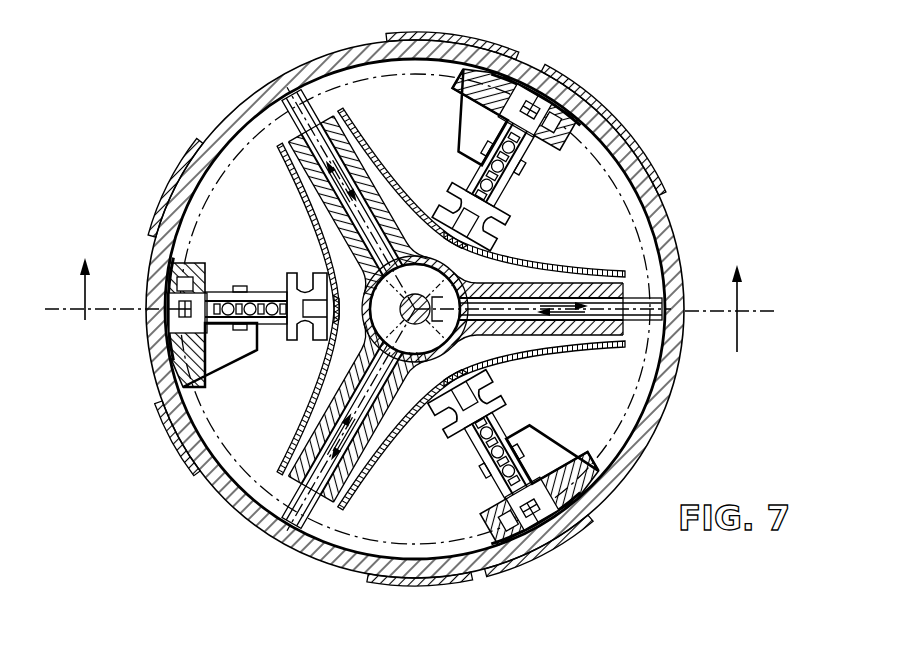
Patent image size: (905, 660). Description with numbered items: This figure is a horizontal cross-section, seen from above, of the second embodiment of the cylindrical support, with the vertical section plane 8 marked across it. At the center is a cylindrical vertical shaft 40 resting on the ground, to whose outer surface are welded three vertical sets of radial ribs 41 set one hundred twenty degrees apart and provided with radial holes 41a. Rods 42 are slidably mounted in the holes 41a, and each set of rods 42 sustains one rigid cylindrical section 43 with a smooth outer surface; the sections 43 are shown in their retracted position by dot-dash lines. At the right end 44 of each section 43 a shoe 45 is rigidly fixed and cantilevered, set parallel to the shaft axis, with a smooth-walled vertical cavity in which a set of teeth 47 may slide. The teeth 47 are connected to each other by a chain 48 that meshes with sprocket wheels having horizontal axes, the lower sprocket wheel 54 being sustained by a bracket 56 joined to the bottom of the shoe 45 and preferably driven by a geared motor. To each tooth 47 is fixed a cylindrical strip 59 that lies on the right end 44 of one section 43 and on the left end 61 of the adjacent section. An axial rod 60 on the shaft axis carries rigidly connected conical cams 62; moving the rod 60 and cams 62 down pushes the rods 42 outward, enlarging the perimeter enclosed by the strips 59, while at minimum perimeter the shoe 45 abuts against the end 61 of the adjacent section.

The section plane 8— 8 is at (411, 306).
The cylindrical vertical shaft 40 is at (417, 255).
The radial ribs 41 is at (332, 203).
The holes 41a is at (348, 128).
The rods 42 is at (325, 87).
The cylindrical section 43 is at (278, 83).
The right end of section 44 is at (502, 58).
The shoe 45 is at (537, 133).
The teeth 47 is at (567, 70).
The chain 48 is at (533, 83).
The lower sprocket wheel 54 is at (505, 168).
The bracket 56 is at (470, 137).
The cylindrical strip 59 is at (178, 410).
The rod 60 is at (425, 292).
The left end of adjacent section 61 is at (623, 130).
The conical cams 62 is at (487, 353).